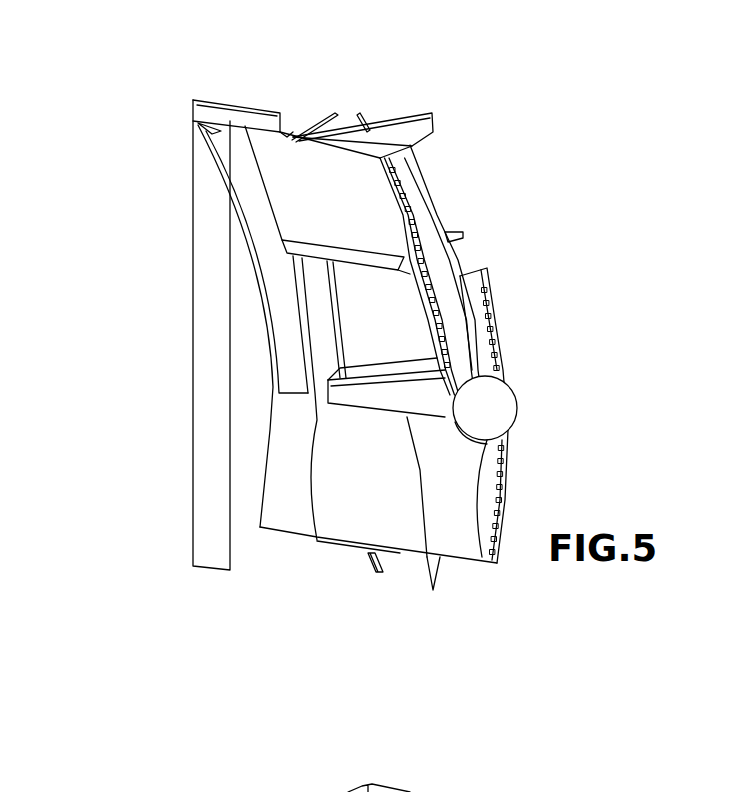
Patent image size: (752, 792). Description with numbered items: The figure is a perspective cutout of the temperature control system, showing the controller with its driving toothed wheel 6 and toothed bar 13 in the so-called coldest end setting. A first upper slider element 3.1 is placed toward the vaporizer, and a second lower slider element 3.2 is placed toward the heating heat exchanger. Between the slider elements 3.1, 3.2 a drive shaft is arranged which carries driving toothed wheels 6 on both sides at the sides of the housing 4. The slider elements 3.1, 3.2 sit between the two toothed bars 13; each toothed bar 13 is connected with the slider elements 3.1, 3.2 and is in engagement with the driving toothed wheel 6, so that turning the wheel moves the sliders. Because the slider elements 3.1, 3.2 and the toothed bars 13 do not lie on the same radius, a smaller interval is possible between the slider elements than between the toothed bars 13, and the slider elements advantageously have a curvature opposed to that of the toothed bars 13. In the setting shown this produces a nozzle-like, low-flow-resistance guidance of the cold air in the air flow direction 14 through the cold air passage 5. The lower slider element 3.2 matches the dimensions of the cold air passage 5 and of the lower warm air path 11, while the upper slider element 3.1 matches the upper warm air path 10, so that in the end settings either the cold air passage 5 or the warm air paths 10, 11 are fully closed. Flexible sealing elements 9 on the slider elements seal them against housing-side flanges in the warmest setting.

The first upper slider element 3.1 is at (265, 182).
The second lower slider element 3.2 is at (357, 483).
The housing 4 is at (207, 247).
The cold air passage 5 is at (357, 323).
The driving toothed wheel 6 is at (525, 397).
The flexible sealing element 9 is at (345, 137).
The upper warm air path 10 is at (427, 163).
The lower warm air path 11 is at (520, 450).
The toothed bar 13 is at (440, 178).
The air flow direction 14 is at (135, 420).